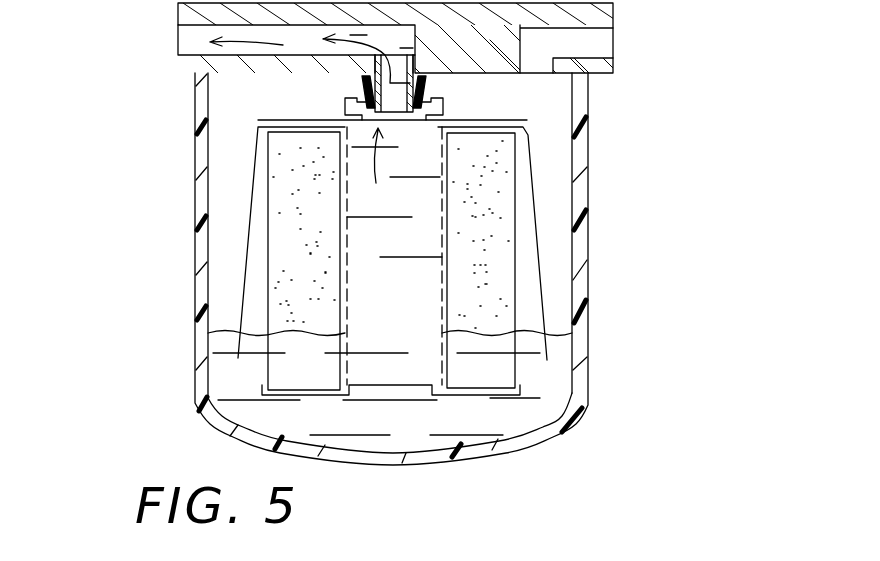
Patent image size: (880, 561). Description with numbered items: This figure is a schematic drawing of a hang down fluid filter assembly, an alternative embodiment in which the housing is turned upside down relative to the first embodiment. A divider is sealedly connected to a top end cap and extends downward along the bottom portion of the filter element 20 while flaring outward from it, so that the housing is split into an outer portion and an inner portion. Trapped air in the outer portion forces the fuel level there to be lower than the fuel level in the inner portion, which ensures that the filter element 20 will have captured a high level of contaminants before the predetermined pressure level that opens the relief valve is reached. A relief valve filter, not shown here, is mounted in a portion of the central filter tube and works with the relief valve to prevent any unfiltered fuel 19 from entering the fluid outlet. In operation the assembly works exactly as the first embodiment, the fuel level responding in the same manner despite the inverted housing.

The filter element 20 is at (282, 268).
The unfiltered fuel 19 is at (540, 397).